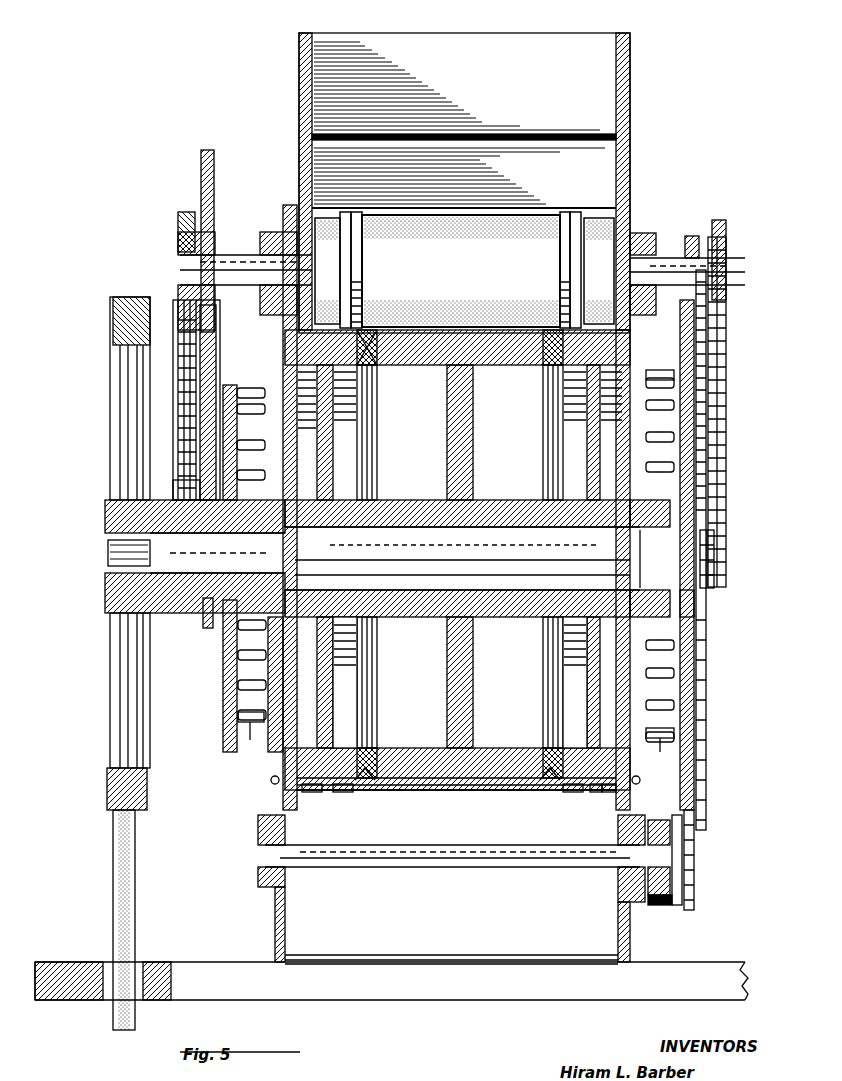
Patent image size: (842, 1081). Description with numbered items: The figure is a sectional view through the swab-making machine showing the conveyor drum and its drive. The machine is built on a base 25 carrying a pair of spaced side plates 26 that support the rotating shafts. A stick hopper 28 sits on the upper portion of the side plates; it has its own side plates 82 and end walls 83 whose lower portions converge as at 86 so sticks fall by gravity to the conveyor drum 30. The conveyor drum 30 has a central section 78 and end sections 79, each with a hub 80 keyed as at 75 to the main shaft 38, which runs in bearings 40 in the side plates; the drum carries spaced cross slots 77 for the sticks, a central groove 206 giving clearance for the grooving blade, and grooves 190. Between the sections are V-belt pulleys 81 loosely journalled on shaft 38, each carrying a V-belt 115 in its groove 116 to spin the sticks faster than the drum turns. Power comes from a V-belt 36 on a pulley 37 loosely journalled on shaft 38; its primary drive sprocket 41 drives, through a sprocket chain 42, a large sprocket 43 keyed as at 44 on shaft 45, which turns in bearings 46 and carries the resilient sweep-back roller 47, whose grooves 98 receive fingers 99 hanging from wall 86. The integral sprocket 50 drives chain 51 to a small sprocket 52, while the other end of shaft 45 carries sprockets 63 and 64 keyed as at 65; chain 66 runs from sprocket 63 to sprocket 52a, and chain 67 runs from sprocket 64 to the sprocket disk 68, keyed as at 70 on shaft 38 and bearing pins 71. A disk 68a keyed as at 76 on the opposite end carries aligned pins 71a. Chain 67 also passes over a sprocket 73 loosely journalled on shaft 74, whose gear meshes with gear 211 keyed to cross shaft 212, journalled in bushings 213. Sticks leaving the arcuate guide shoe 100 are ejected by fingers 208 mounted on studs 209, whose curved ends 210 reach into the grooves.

The base 25 is at (695, 975).
The side plates 26 is at (278, 462).
The stick hopper 28 is at (610, 64).
The conveyor drum 30 is at (420, 785).
The V-belt 36 is at (136, 858).
The V-belt pulley 37 is at (110, 775).
The shaft 38 is at (176, 565).
The bearings 40 is at (268, 610).
The primary drive sprocket 41 is at (207, 620).
The sprocket chain 42 is at (183, 392).
The large sprocket 43 is at (212, 152).
The key 44 is at (216, 240).
The shaft 45 is at (243, 272).
The bearings 46 is at (283, 232).
The sweep-back roller 47 is at (503, 240).
The integral sprocket 50 is at (190, 212).
The sprocket chain 51 is at (180, 425).
The small sprocket 52 is at (178, 505).
The sprocket 52a is at (728, 560).
The sprocket 63 is at (722, 220).
The small drive sprocket 64 is at (692, 236).
The key 65 is at (732, 258).
The sprocket chain 66 is at (727, 410).
The sprocket chain 67 is at (680, 352).
The sprocket disk 68 is at (695, 700).
The disk 68a is at (224, 692).
The key 70 is at (675, 535).
The pins 71 is at (659, 566).
The pins 71a is at (254, 739).
The sprocket 73 is at (684, 836).
The shaft 74 is at (697, 862).
The key 75 is at (492, 520).
The key 76 is at (240, 530).
The cross slots 77 is at (505, 335).
The central section 78 is at (500, 362).
The end sections 79 is at (337, 762).
The hub 80 is at (343, 500).
The V-belt pulleys 81 is at (365, 768).
The side plates 82 is at (300, 70).
The end walls 83 is at (504, 46).
The converging portions 86 is at (612, 180).
The grooves 98 is at (352, 238).
The fingers 99 is at (352, 262).
The arcuate guide shoe 100 is at (343, 792).
The V-belt 115 is at (372, 335).
The groove 116 is at (386, 372).
The groove 190 is at (594, 792).
The groove 206 is at (465, 330).
The ejector fingers 208 is at (312, 792).
The studs 209 is at (270, 780).
The curved ends 210 is at (610, 792).
The gear 211 is at (660, 905).
The cross shaft 212 is at (390, 862).
The bushings 213 is at (262, 878).